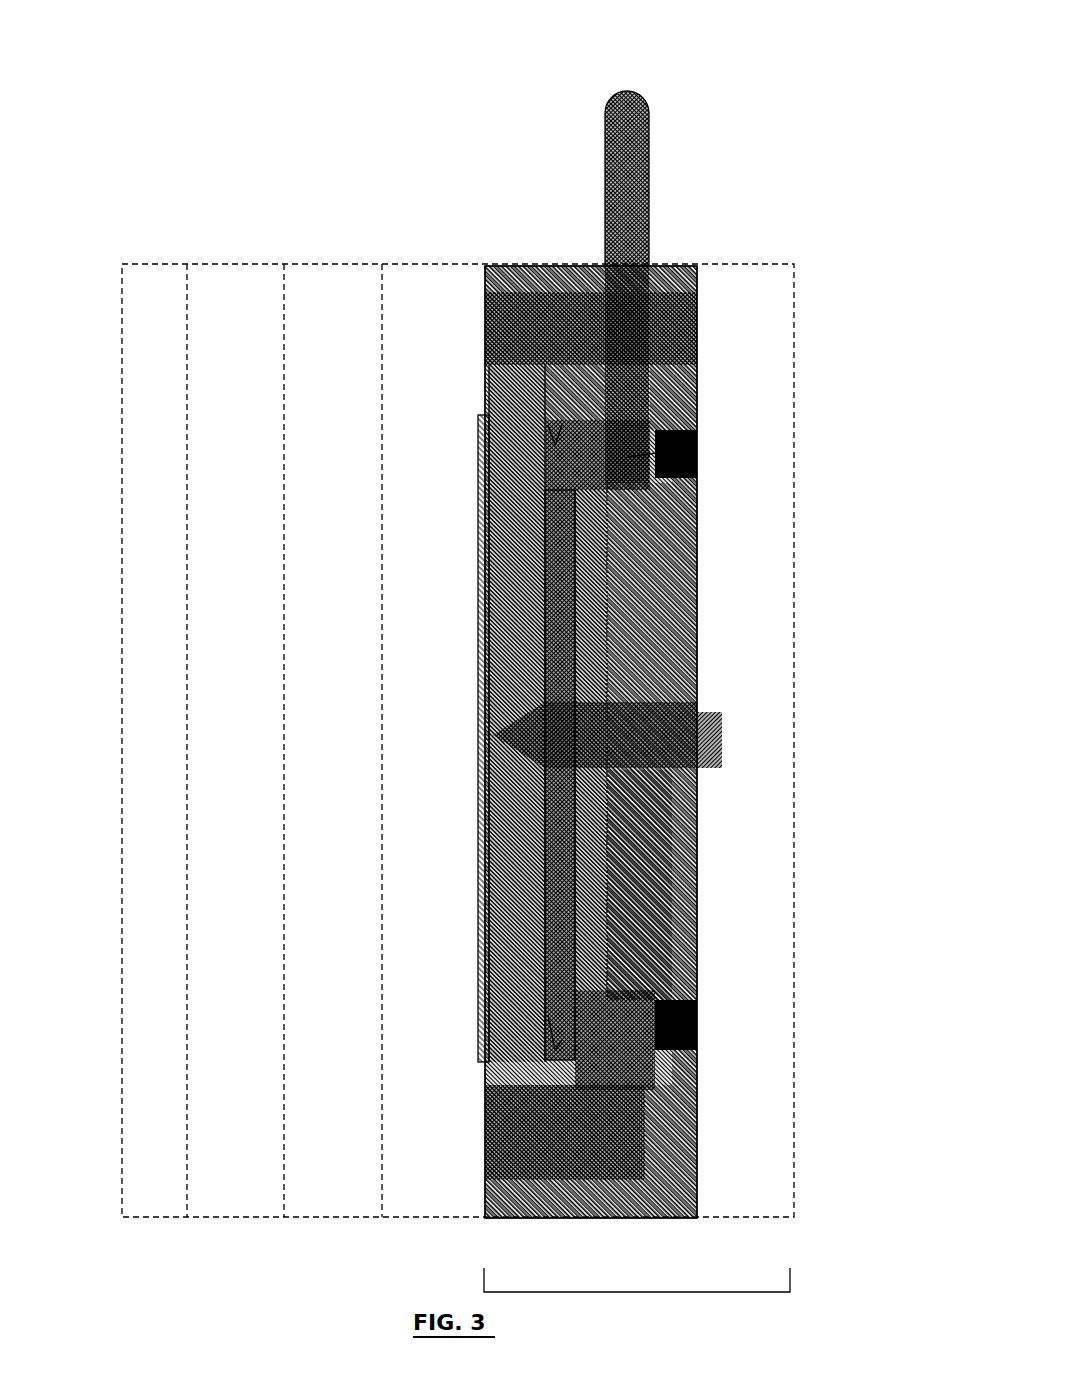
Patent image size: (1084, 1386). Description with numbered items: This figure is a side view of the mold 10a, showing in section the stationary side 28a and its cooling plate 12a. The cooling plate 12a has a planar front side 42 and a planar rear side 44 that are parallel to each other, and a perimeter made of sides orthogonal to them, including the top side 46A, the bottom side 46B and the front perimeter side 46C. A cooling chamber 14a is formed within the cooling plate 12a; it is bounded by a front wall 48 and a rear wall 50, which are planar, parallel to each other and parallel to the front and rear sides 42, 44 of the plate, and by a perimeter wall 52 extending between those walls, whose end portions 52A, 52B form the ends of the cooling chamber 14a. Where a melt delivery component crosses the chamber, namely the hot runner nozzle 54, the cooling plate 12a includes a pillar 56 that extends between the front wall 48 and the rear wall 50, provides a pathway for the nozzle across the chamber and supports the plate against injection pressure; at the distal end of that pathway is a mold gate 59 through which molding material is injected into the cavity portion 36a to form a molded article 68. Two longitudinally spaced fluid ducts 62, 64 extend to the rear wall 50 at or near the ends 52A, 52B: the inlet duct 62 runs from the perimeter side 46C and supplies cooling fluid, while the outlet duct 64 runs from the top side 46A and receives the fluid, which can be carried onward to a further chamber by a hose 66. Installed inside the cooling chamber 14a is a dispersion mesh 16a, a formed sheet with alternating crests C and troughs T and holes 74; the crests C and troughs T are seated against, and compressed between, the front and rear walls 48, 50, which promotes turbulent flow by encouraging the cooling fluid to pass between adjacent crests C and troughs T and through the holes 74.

The mold 10a is at (166, 76).
The cooling plate 12a is at (537, 275).
The cooling chamber 14a is at (542, 917).
The dispersion mesh 16a is at (550, 843).
The stationary side 28a is at (637, 1289).
The cavity portion 36a is at (480, 642).
The front side 42 is at (487, 387).
The rear side 44 is at (697, 572).
The top side 46A is at (660, 262).
The bottom side 46B is at (570, 1220).
The front side (perimeter side) 46C is at (662, 862).
The front wall 48 is at (547, 537).
The rear wall 50 is at (697, 505).
The perimeter wall 52 is at (559, 1048).
The end (perimeter wall portion) 52A is at (555, 425).
The end (perimeter wall portion) 52B is at (547, 1017).
The hot runner nozzle 54 is at (717, 735).
The pillar 56 is at (697, 775).
The mold gate 59 is at (500, 738).
The fluid duct (inlet passageway) 62 is at (627, 1030).
The fluid duct (outlet passageway) 64 is at (697, 455).
The hose 66 is at (603, 122).
The molded article 68 is at (480, 710).
The hole 74 is at (567, 677).
The crest C is at (545, 565).
The trough T is at (577, 614).